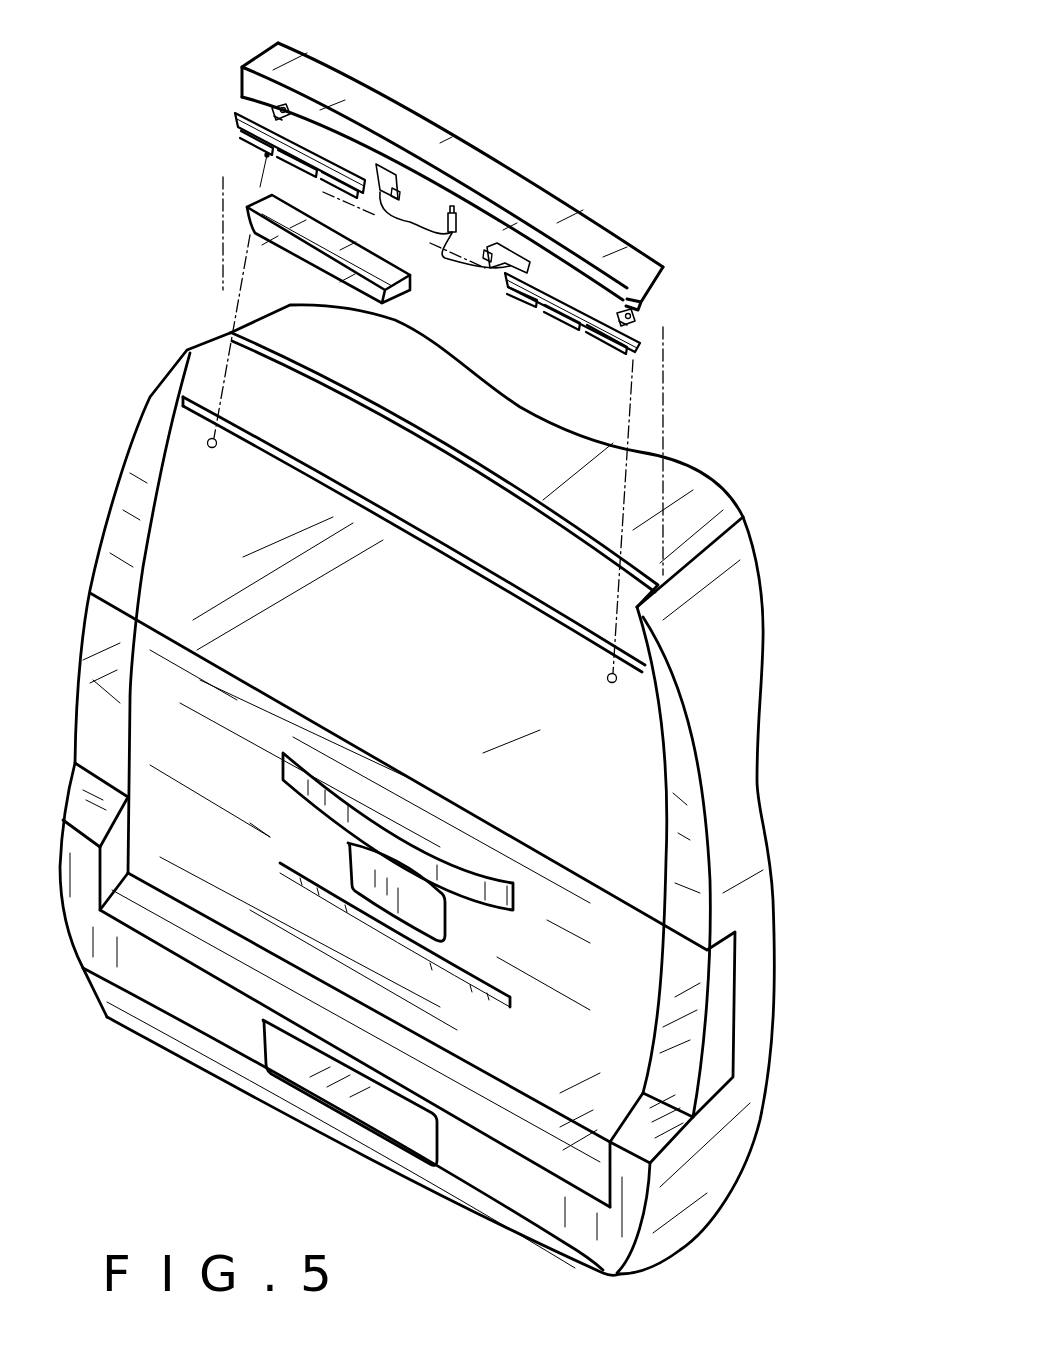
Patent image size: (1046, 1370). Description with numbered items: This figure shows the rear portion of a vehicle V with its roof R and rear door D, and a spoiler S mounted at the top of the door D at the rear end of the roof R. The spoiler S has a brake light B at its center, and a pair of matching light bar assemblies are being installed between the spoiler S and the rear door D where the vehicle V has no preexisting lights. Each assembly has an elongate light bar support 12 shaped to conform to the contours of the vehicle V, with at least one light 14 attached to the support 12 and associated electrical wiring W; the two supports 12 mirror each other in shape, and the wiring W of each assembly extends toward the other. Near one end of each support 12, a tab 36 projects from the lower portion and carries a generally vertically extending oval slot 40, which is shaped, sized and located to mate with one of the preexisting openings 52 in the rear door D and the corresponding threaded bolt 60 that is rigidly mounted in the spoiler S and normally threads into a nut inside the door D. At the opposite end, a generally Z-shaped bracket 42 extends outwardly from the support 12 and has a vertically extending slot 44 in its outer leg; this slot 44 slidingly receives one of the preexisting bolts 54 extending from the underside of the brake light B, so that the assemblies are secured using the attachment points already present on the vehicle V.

The light bar support 12 is at (322, 131).
The light 14 is at (300, 150).
The tab 36 is at (268, 112).
The slot 40 is at (279, 112).
The bracket 42 is at (382, 165).
The slot 44 is at (487, 247).
The preexisting openings 52 is at (208, 442).
The bolts 54 is at (302, 205).
The bolts 60 is at (280, 110).
The spoiler S is at (536, 178).
The electrical wiring W is at (412, 222).
The brake light B is at (338, 270).
The roof R is at (525, 435).
The vehicle V is at (838, 565).
The rear door D is at (213, 775).